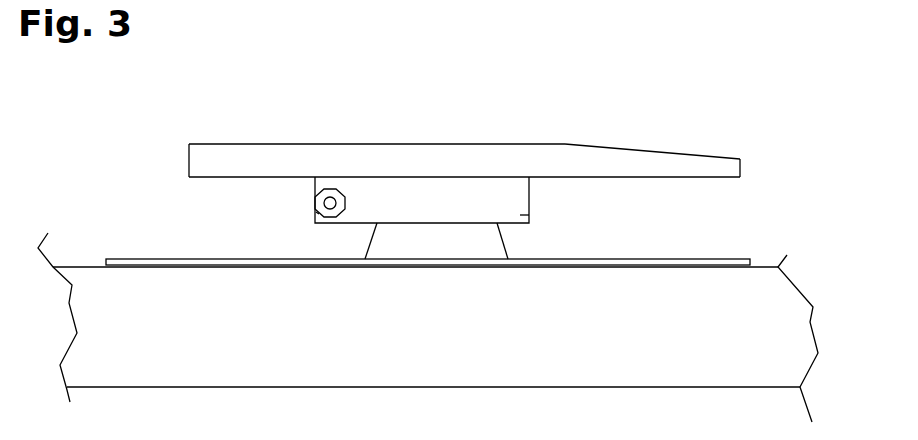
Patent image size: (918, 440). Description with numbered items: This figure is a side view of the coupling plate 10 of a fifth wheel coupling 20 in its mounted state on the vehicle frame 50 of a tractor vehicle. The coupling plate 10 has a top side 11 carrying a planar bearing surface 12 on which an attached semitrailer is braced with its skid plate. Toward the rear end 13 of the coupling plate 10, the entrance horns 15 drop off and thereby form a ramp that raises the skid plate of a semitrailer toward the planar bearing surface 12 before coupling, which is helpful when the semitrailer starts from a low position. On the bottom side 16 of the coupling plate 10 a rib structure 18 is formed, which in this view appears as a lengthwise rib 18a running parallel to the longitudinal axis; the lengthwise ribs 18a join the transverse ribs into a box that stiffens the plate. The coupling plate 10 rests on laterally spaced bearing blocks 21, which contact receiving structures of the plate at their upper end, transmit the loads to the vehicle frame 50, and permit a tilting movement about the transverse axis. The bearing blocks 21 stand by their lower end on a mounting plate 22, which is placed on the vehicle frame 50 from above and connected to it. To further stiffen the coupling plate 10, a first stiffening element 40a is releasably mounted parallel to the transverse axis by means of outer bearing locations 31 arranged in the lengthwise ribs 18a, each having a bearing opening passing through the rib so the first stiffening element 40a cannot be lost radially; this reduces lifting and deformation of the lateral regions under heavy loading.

The coupling plate 10 is at (502, 145).
The top side 11 is at (536, 143).
The planar bearing surface 12 is at (220, 144).
The rear end 13 is at (741, 164).
The entrance horns 15 is at (694, 155).
The bottom side 16 is at (700, 178).
The rib structure 18 is at (540, 234).
The lengthwise ribs 18a is at (522, 215).
The fifth wheel coupling 20 is at (806, 195).
The bearing blocks 21 is at (418, 252).
The mounting plate 22 is at (130, 258).
The outer bearing locations 31 is at (318, 215).
The first stiffening element 40a is at (326, 203).
The vehicle frame 50 is at (686, 347).